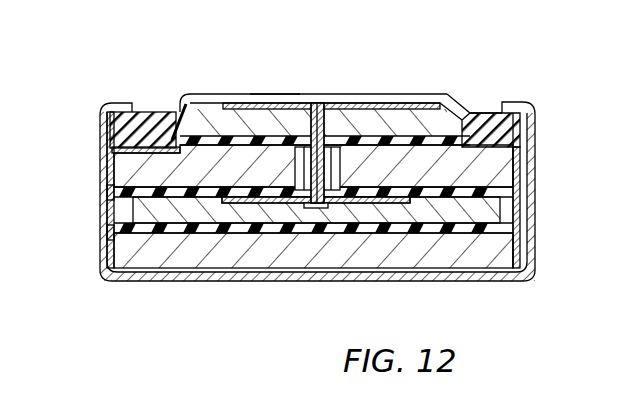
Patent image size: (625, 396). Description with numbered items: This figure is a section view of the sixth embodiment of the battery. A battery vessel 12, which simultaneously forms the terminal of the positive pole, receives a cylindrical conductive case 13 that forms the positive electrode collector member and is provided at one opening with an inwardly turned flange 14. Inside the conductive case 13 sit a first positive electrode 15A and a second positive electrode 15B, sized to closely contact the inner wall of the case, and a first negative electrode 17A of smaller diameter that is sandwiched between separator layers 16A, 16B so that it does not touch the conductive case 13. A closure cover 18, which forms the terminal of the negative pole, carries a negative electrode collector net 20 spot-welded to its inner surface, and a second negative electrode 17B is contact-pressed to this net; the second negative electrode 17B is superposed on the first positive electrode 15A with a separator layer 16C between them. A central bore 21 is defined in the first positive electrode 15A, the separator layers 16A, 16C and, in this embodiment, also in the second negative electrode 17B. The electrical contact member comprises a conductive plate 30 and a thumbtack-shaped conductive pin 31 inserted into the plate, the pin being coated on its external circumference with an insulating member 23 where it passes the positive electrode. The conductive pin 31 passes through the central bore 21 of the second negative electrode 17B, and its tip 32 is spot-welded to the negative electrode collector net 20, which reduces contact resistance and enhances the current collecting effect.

The battery vessel 12 is at (172, 283).
The conductive case 13 is at (108, 153).
The inwardly turned flange 14 is at (482, 102).
The first positive electrode 15A is at (517, 167).
The second positive electrode 15B is at (517, 260).
The separator layer 16A is at (110, 192).
The separator layer 16B is at (110, 232).
The separator layer 16C is at (173, 101).
The first negative electrode 17A is at (508, 220).
The second negative electrode 17B is at (197, 100).
The closure cover 18 is at (432, 96).
The negative electrode collector net 20 is at (375, 100).
The central bore 21 is at (277, 100).
The insulating member 23 is at (352, 105).
The conductive plate 30 is at (257, 203).
The conductive pin 31 is at (333, 108).
The tip 32 is at (312, 108).